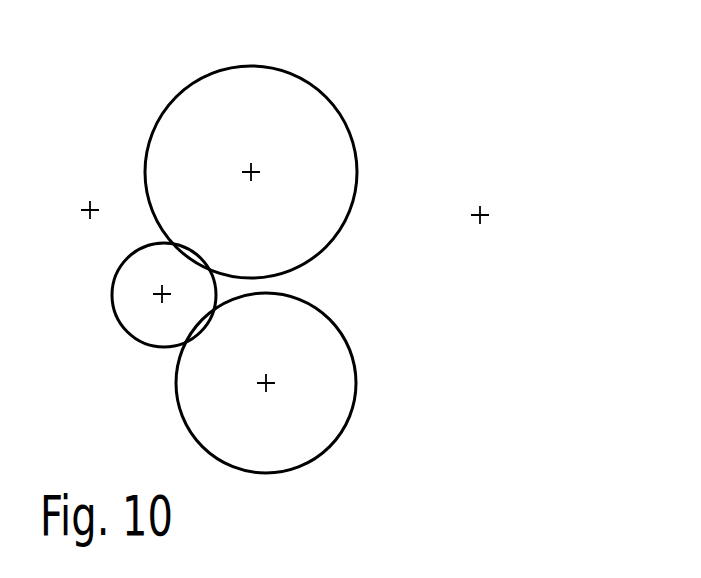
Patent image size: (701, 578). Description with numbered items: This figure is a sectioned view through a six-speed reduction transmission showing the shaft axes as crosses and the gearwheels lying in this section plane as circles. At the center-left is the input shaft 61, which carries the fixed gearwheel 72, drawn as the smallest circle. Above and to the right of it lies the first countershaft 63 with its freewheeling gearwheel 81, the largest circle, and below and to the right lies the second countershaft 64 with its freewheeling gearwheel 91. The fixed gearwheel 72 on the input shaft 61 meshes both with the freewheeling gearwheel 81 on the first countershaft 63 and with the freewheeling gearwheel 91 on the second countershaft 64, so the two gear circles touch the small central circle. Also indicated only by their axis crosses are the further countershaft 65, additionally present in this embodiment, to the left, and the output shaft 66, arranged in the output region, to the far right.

The freewheeling gearwheel 81 is at (272, 88).
The first countershaft 63 is at (254, 170).
The fixed gearwheel 72 is at (118, 284).
The input shaft 61 is at (160, 297).
The freewheeling gearwheel 91 is at (343, 385).
The second countershaft 64 is at (270, 380).
The further countershaft 65 is at (93, 207).
The output shaft 66 is at (485, 212).